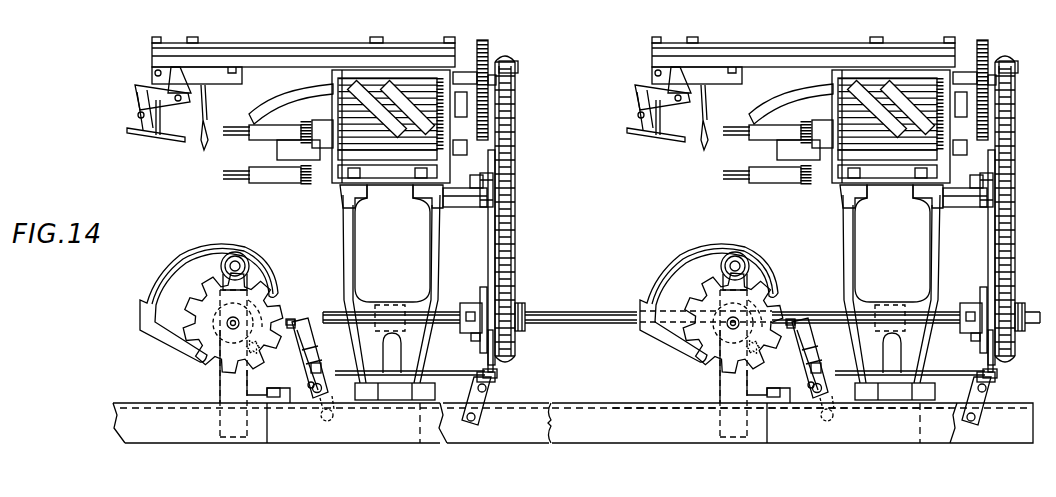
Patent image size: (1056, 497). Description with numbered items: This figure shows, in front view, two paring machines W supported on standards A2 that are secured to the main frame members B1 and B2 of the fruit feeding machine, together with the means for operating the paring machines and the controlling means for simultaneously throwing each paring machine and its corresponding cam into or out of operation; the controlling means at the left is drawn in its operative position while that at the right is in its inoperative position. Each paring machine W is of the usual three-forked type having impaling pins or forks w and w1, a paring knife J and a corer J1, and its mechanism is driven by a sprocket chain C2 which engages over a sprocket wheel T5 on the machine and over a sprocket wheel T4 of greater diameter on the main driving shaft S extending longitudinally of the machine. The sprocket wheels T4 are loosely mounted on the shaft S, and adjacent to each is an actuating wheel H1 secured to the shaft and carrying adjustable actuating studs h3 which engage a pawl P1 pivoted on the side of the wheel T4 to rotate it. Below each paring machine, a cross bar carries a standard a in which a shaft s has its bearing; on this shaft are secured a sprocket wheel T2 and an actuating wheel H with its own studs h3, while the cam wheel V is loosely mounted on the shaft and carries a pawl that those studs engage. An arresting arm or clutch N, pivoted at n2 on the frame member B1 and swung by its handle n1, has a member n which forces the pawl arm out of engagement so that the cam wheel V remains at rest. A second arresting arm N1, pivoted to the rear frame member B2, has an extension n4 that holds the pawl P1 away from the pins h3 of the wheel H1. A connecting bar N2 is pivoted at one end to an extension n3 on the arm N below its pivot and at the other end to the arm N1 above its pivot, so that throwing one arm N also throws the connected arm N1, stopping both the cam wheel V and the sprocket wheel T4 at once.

The paring machine W is at (394, 43).
The sprocket wheel T5 is at (757, 197).
The sprocket chain C2 is at (515, 220).
The sprocket wheel T4 is at (516, 296).
The actuating wheel H1 is at (481, 288).
The actuating stud h3 is at (471, 337).
The pawl P1 is at (747, 358).
The main driving shaft S is at (596, 312).
The standard A2 is at (356, 233).
The connecting bar N2 is at (660, 385).
The arresting arm N1 is at (492, 397).
The extension n4 is at (500, 377).
The arresting arm N is at (314, 350).
The member n is at (295, 320).
The operating handle n1 is at (321, 366).
The pivot n2 is at (309, 385).
The extension n3 is at (572, 418).
The sprocket wheel T2 is at (279, 302).
The actuating wheel H is at (226, 328).
The shaft s is at (227, 329).
The standard a is at (222, 385).
The cam wheel V is at (178, 262).
The corer J1 is at (408, 118).
The paring knife J is at (446, 127).
The impaling fork w is at (238, 132).
The impaling fork w1 is at (513, 186).
The main frame member B1 is at (137, 424).
The main frame member B2 is at (738, 423).